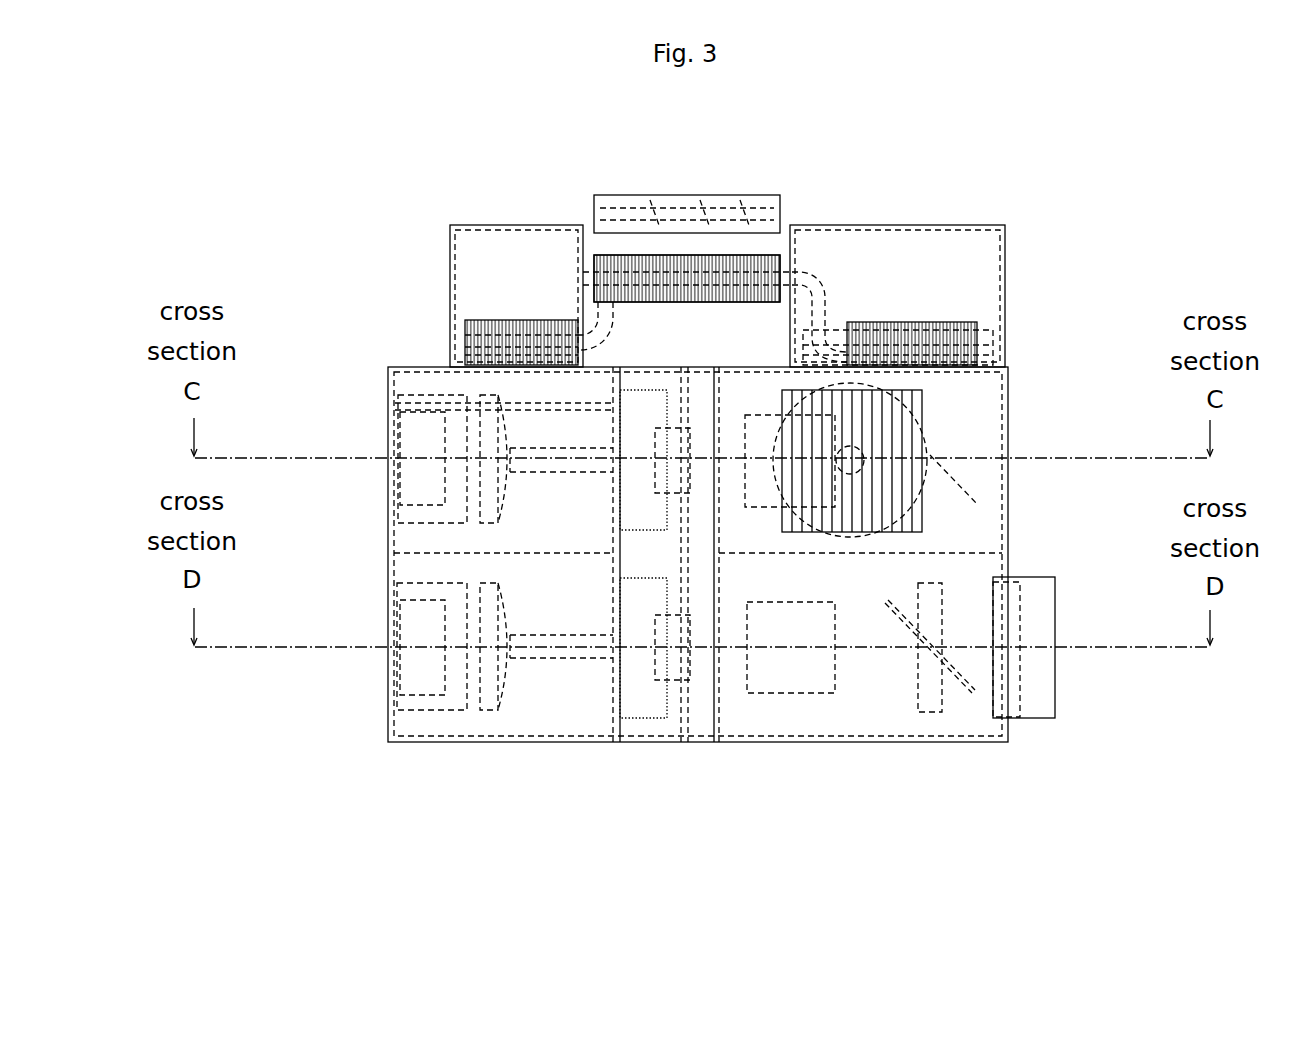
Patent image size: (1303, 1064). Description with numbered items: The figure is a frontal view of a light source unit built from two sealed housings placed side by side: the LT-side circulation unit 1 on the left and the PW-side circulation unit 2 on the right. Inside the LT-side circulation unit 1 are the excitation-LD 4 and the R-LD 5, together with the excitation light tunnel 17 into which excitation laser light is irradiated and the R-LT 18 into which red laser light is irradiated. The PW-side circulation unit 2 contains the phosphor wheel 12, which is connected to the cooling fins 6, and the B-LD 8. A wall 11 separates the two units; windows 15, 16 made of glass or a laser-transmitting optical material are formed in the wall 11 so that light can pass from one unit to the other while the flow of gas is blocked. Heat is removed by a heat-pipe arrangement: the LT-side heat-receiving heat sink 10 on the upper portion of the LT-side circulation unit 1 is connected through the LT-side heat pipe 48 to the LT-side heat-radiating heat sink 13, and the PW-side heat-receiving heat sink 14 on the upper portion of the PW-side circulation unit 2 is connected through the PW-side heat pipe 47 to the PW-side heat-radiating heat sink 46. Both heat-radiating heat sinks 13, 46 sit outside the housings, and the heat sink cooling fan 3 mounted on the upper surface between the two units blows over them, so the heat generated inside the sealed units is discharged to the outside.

The LT-side circulation unit 1 is at (487, 252).
The PW-side circulation unit 2 is at (918, 247).
The heat sink cooling fan 3 is at (617, 193).
The excitation-LD 4 is at (633, 480).
The R-LD 5 is at (630, 670).
The cooling fins 6 is at (880, 487).
The B-LD 8 is at (1032, 660).
The LT-side heat-receiving heat sink 10 is at (458, 322).
The wall 11 is at (685, 713).
The phosphor wheel 12 is at (927, 440).
The LT-side heat-radiating heat sink 13 is at (682, 255).
The PW-side heat-receiving heat sink 14 is at (912, 320).
The window 15 is at (687, 445).
The window 16 is at (688, 667).
The excitation light tunnel 17 is at (548, 448).
The R-LT 18 is at (560, 657).
The PW-side heat-radiating heat sink 46 is at (682, 255).
The PW-side heat pipe 47 is at (820, 292).
The LT-side heat pipe 48 is at (600, 327).